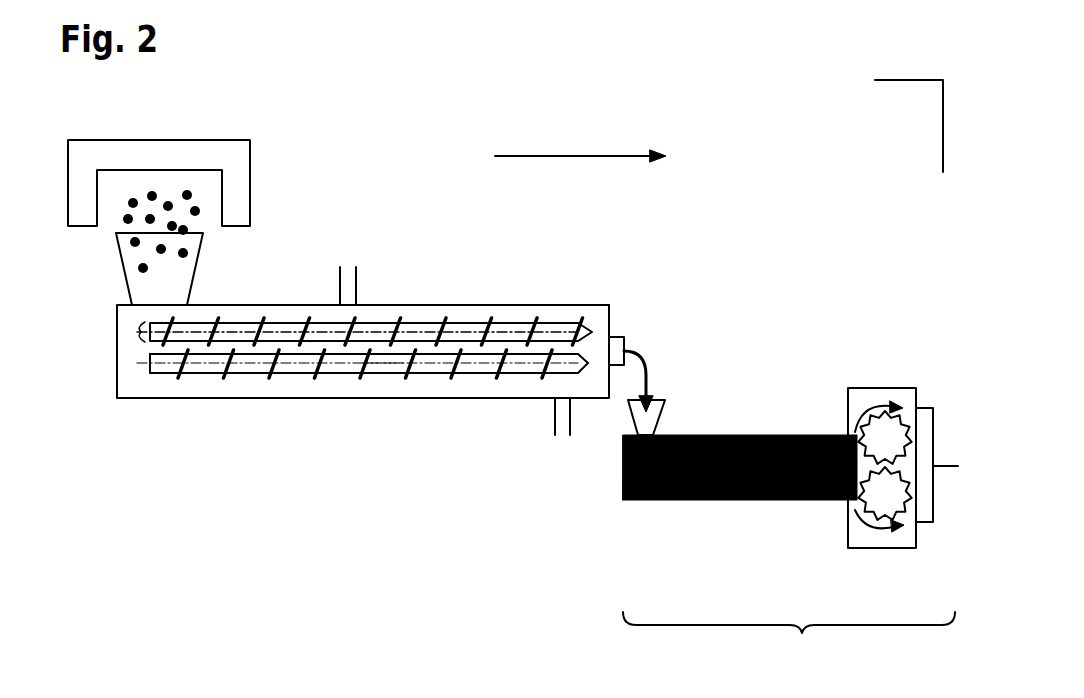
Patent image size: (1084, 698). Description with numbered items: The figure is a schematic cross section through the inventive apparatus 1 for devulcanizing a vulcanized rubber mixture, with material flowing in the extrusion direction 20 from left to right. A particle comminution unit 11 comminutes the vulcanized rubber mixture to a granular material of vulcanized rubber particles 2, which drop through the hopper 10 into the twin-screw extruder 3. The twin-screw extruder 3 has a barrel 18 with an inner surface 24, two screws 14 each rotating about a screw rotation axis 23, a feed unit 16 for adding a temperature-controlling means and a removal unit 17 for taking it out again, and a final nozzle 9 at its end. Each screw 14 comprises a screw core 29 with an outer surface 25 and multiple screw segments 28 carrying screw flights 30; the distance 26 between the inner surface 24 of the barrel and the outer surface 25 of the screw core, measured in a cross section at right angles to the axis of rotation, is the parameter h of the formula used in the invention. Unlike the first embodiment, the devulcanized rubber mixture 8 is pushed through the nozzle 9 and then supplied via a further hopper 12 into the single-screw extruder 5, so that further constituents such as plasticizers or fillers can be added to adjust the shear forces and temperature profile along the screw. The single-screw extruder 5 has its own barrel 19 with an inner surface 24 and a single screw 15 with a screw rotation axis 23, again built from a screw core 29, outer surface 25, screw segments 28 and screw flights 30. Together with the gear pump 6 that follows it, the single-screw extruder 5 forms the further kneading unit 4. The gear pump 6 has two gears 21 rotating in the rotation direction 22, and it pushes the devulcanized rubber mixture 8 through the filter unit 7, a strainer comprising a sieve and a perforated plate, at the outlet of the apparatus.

The inventive apparatus 1 is at (908, 80).
The vulcanized rubber particles 2 is at (188, 192).
The twin-screw extruder 3 is at (128, 368).
The further kneading unit 4 is at (789, 639).
The single-screw extruder 5 is at (623, 497).
The gear pump 6 is at (907, 543).
The filter unit 7 is at (927, 423).
The devulcanized rubber mixture 8 is at (945, 463).
The nozzle 9 is at (624, 345).
The hopper 10 is at (122, 268).
The particle comminution unit 11 is at (133, 150).
The further hopper 12 is at (655, 400).
The screw of the twin-screw extruder 14 is at (383, 313).
The screw of the single-screw extruder 15 is at (752, 435).
The feed unit 16 is at (347, 277).
The removal unit 17 is at (555, 421).
The barrel of the twin-screw extruder 18 is at (598, 307).
The barrel of the single-screw extruder 19 is at (630, 500).
The extrusion direction 20 is at (525, 156).
The gears of the gear pump 21 is at (883, 423).
The rotation direction of the gears 22 is at (890, 423).
The screw rotation axis 23 is at (240, 313).
The inner surface of the extrusion barrel 24 is at (302, 306).
The outer surface of the screw core 25 is at (492, 337).
The distance 26 is at (558, 318).
The screw segment 28 is at (260, 373).
The screw core 29 is at (133, 333).
The screw flight 30 is at (363, 377).